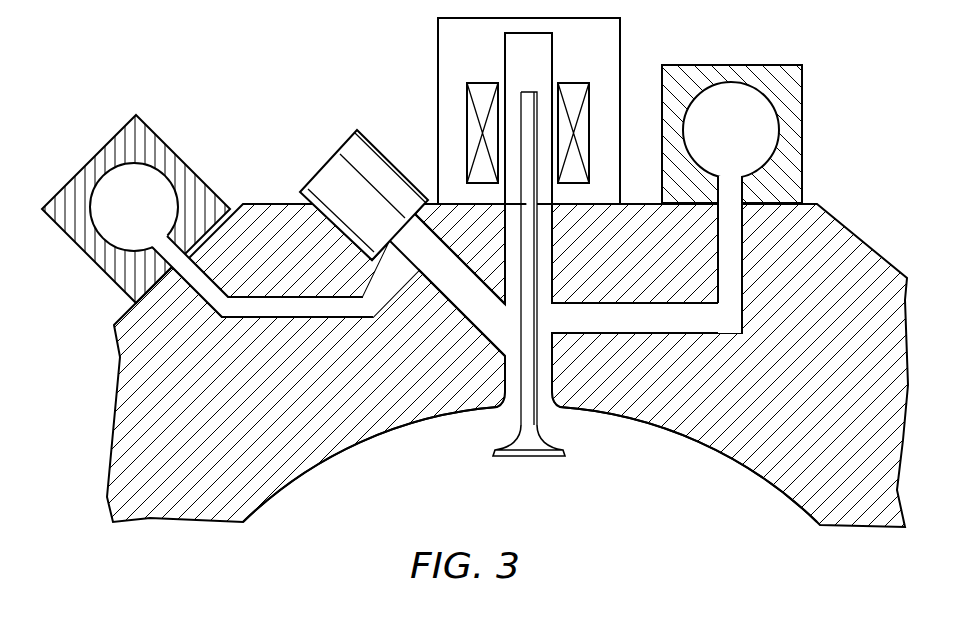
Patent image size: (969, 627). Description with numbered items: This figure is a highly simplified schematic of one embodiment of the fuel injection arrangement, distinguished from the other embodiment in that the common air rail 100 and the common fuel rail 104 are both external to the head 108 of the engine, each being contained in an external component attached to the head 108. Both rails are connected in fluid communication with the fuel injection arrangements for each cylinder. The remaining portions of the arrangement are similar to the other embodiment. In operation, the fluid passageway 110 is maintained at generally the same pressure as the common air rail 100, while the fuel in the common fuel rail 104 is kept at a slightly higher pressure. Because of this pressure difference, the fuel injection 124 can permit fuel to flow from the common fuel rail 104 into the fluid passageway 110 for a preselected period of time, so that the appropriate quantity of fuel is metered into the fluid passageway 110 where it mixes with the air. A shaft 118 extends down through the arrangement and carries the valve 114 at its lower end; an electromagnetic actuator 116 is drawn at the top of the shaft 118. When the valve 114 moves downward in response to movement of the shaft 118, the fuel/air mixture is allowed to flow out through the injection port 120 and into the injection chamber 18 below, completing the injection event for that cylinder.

The injection chamber 18 is at (682, 470).
The common air rail 100 is at (748, 145).
The common fuel rail 104 is at (113, 222).
The head 108 is at (857, 236).
The fluid passageway 110 is at (510, 368).
The valve 114 is at (537, 427).
The electromagnetic valve actuator 116 is at (573, 92).
The shaft 118 is at (527, 254).
The injection port 120 is at (513, 397).
The fuel injection 124 is at (337, 167).